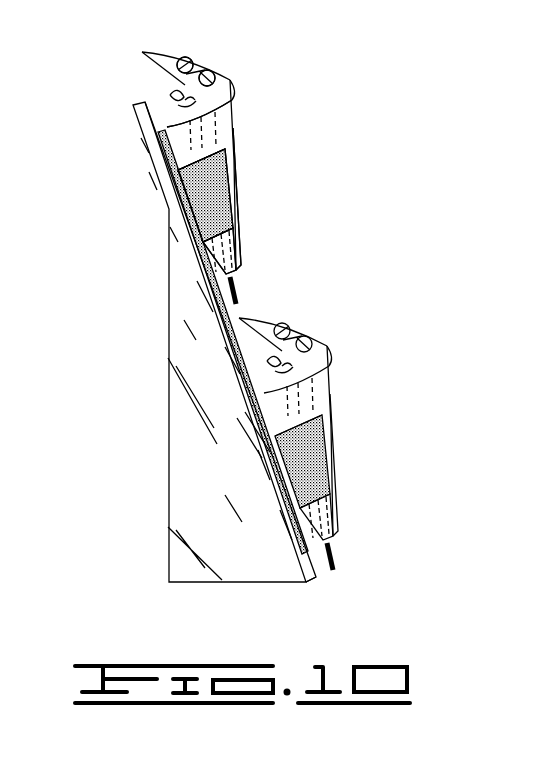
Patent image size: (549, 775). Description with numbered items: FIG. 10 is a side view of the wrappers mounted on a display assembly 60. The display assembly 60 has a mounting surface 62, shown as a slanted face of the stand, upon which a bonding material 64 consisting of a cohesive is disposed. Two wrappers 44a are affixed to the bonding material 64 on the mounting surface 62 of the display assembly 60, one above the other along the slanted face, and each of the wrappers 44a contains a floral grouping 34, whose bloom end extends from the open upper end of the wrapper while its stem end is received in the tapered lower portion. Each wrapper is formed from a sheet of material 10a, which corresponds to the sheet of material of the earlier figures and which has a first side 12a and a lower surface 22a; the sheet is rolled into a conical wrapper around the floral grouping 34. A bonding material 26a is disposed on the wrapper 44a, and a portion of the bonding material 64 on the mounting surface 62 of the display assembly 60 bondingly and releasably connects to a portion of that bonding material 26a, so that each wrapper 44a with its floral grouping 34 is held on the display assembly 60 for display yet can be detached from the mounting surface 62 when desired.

The floral sleeve 10a is at (233, 95).
The lower portion of sleeve 12a is at (233, 226).
The upper portion of sleeve 22a is at (235, 132).
The bonding material 26a is at (241, 247).
The floral grouping 34 is at (200, 58).
The wrapper 44a is at (243, 172).
The display assembly 60 is at (147, 178).
The mounting surface 62 is at (316, 577).
The bonding material 64 is at (324, 393).